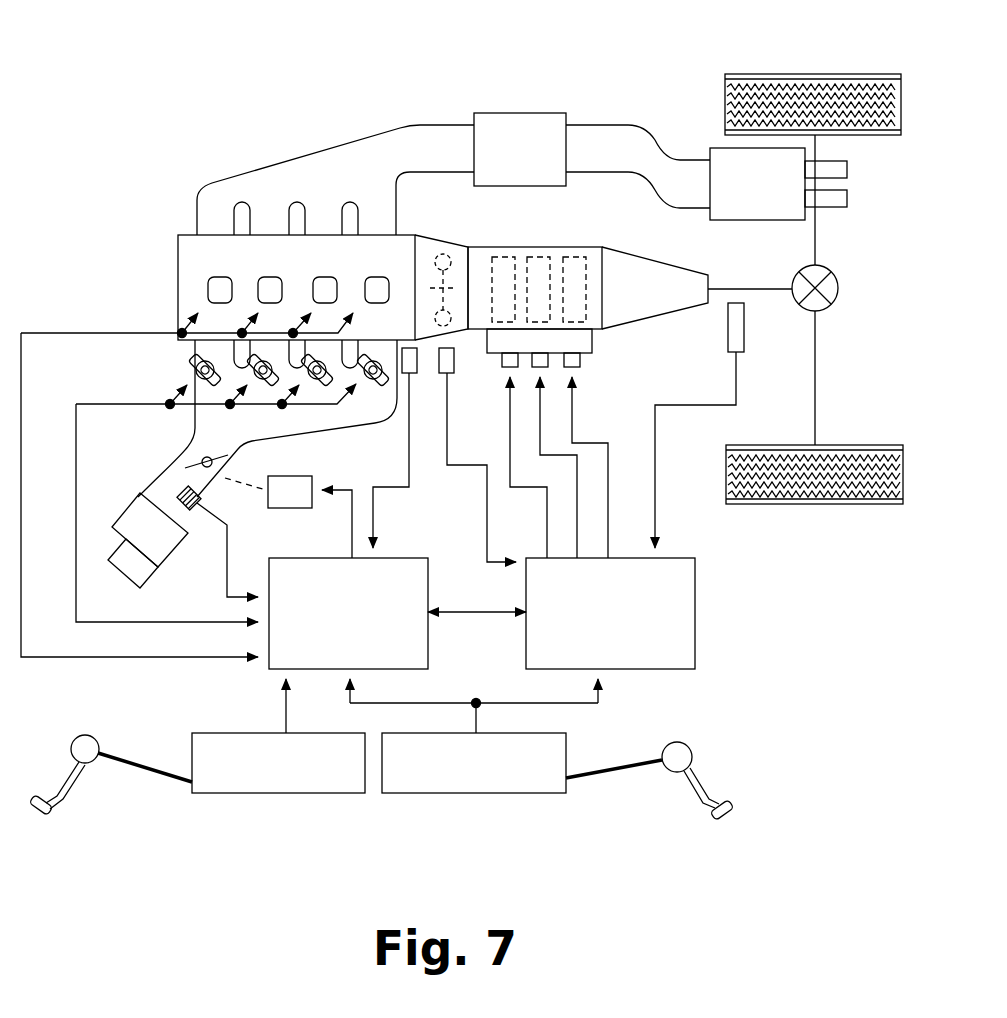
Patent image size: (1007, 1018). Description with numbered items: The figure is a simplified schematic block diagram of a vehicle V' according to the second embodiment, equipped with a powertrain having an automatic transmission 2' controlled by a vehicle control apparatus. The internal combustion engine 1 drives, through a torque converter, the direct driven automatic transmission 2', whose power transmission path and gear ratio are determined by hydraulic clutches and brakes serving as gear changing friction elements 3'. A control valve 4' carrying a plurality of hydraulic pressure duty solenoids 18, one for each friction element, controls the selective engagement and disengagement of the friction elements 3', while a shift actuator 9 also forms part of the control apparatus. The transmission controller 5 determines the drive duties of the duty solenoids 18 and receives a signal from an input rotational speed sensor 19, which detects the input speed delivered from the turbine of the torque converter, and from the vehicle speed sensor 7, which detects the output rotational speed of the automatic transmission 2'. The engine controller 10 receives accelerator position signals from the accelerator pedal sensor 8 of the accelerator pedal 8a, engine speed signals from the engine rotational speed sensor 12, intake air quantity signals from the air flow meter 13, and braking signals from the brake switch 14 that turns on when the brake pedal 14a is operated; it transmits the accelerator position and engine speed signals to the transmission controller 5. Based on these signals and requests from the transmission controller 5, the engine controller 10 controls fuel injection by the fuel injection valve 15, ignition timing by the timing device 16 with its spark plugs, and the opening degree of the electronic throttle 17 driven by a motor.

The vehicle V' is at (787, 252).
The internal combustion engine 1 is at (168, 192).
The automatic transmission 2' is at (737, 250).
The gear changing friction elements 3' is at (544, 261).
The control valve 4' is at (562, 443).
The transmission controller 5 is at (678, 558).
The vehicle speed sensor 7 is at (745, 335).
The accelerator pedal sensor 8 is at (568, 752).
The accelerator pedal 8a is at (688, 745).
The shift actuator 9 is at (637, 323).
The engine controller 10 is at (428, 558).
The engine rotational speed sensor 12 is at (413, 377).
The air flow meter 13 is at (205, 506).
The brake switch 14 is at (190, 760).
The brake pedal 14a is at (80, 737).
The fuel injection valve 15 is at (194, 367).
The timing device 16 is at (177, 283).
The electronic throttle 17 is at (323, 463).
The hydraulic pressure duty solenoids 18 is at (436, 124).
The input rotational speed sensor 19 is at (549, 113).